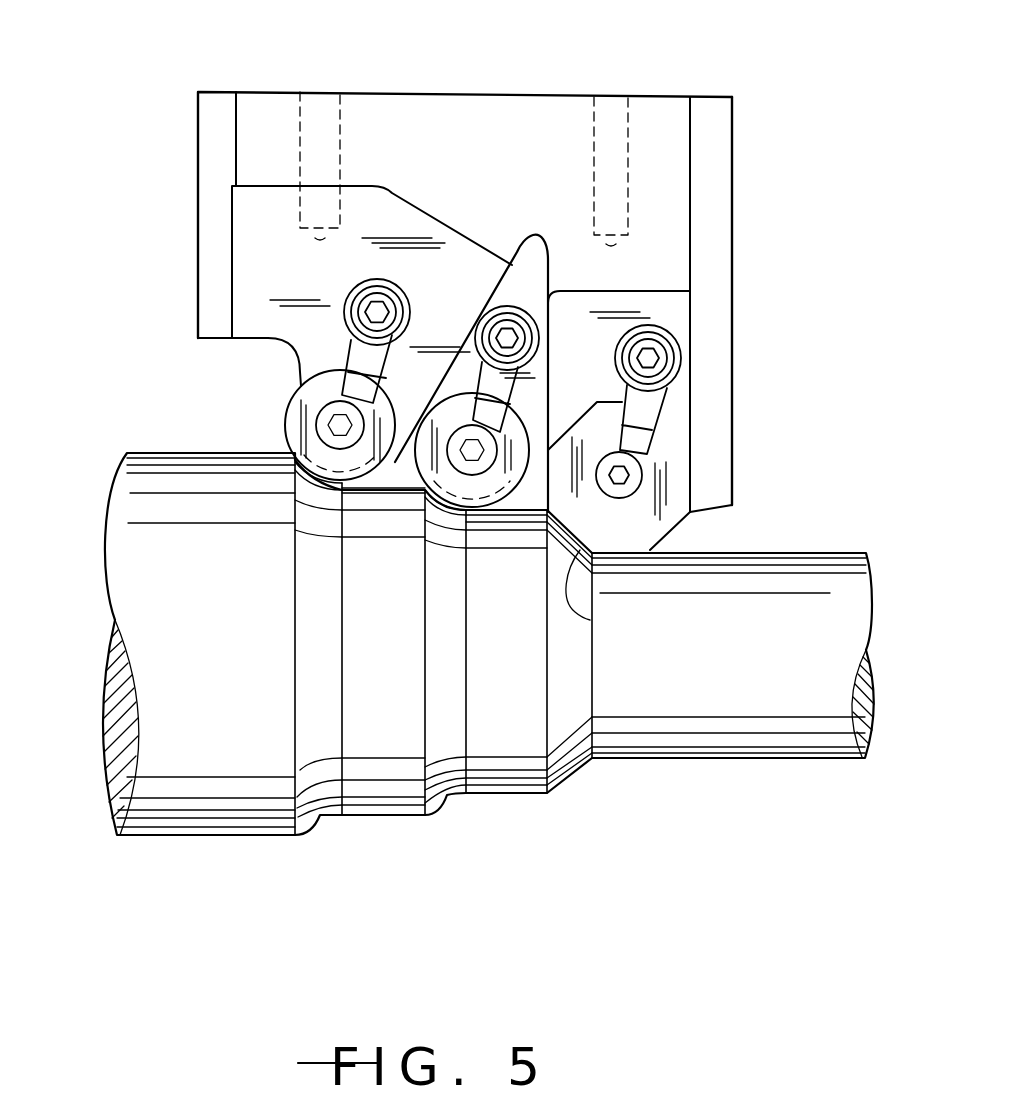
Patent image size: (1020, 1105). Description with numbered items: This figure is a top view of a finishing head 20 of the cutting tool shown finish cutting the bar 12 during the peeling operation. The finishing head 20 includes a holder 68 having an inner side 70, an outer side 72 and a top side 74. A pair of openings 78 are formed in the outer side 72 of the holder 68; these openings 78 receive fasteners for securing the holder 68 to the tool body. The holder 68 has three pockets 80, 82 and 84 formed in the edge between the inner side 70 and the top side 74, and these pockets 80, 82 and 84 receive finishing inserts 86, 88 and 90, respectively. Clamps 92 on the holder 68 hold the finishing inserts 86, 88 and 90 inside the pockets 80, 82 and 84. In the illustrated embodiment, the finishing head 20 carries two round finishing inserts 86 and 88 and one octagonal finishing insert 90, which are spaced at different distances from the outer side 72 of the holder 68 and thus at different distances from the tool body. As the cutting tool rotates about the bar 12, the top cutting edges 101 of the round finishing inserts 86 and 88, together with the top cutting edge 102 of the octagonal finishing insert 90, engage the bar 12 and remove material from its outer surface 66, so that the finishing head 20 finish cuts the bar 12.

The finishing head 20 is at (165, 128).
The bar 12 is at (192, 788).
The outer surface 66 is at (190, 453).
The holder 68 is at (505, 115).
The inner side 70 is at (713, 512).
The outer side 72 is at (660, 97).
The top side 74 is at (673, 245).
The openings 78 is at (345, 135).
The pocket 80 is at (322, 383).
The pocket 82 is at (431, 400).
The pocket 84 is at (672, 442).
The round finishing insert 86 is at (300, 413).
The round finishing insert 88 is at (507, 492).
The octagonal finishing insert 90 is at (678, 482).
The clamps 92 is at (349, 315).
The top cutting edges 101 is at (318, 490).
The top cutting edge 102 is at (590, 620).